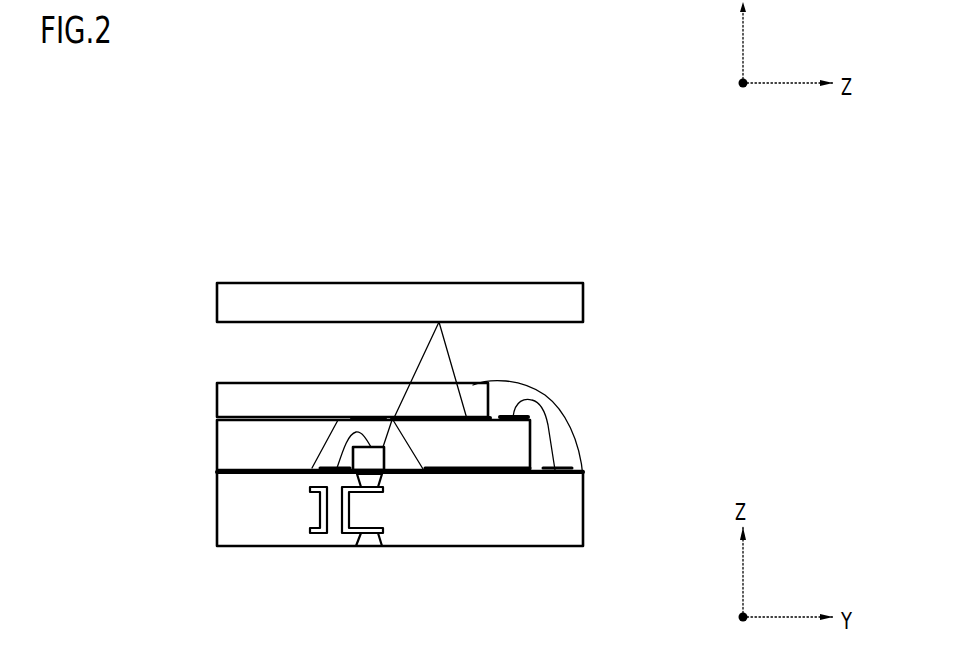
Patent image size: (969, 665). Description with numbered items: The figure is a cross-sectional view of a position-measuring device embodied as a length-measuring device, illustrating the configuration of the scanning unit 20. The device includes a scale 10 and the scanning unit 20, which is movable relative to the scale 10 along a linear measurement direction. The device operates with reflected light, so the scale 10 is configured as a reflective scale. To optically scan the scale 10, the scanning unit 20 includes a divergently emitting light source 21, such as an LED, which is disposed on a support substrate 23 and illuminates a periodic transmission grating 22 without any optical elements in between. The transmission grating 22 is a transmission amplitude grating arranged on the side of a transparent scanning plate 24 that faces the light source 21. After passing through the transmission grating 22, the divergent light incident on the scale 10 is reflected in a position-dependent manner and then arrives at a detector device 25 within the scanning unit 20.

The scale 10 is at (207, 324).
The scanning unit 20 is at (182, 533).
The light source 21 is at (372, 455).
The transmission grating 22 is at (365, 417).
The support substrate 23 is at (245, 525).
The scanning plate 24 is at (232, 401).
The detector device 25 is at (472, 440).